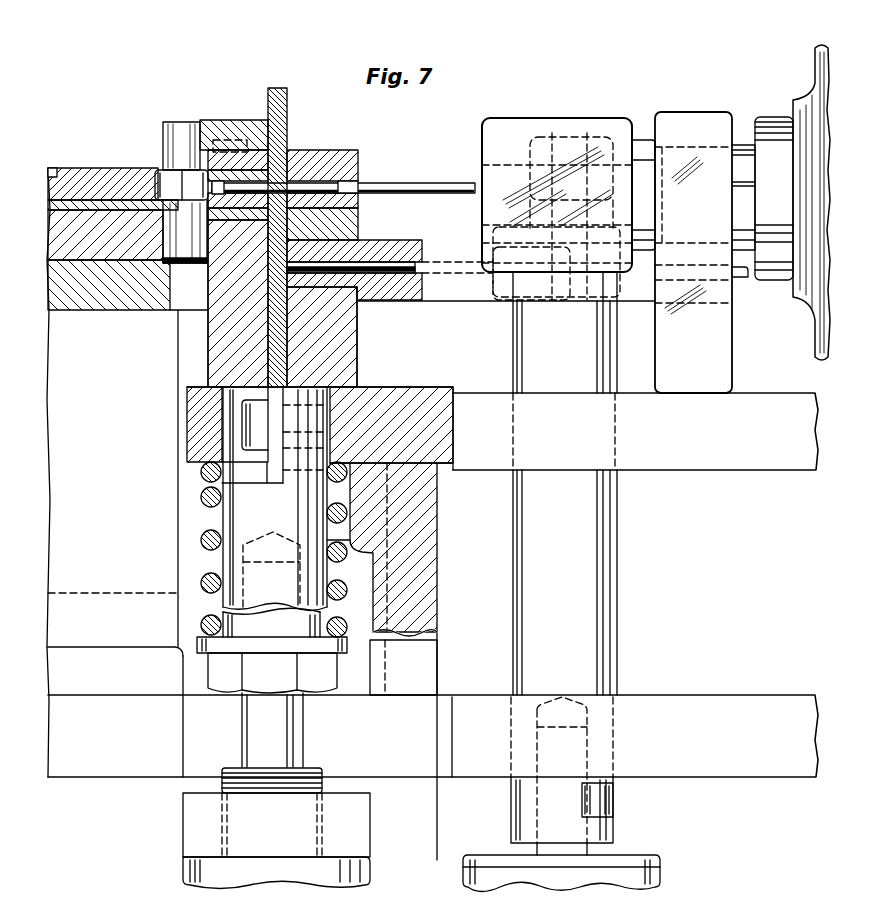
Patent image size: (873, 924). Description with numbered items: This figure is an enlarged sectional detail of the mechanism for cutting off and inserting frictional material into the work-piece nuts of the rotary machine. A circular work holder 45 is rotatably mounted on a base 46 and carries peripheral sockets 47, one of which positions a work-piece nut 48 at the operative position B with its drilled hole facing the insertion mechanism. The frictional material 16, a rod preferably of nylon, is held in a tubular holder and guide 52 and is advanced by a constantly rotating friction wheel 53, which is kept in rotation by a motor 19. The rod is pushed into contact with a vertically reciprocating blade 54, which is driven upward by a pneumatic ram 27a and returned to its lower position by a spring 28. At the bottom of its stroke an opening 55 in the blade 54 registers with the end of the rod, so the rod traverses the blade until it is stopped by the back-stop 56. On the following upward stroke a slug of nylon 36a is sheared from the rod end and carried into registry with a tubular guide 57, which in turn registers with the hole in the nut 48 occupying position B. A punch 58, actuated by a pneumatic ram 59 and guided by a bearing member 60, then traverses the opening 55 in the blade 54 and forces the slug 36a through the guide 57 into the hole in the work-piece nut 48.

The operative position B is at (167, 182).
The work-piece nut 48 is at (163, 170).
The peripheral sockets 47 is at (158, 195).
The circular work holder 45 is at (92, 242).
The base 46 is at (100, 743).
The back-stop 56 is at (222, 318).
The tubular guide 57 is at (247, 205).
The slug of nylon 36a is at (286, 180).
The blade 54 is at (288, 106).
The punch 58 is at (386, 191).
The bearing member 60 is at (343, 203).
The opening 55 is at (285, 208).
The frictional material 16 is at (384, 270).
The tubular holder and guide 52 is at (462, 288).
The friction wheel 53 is at (510, 290).
The pneumatic ram 59 is at (808, 122).
The spring 28 is at (203, 540).
The pneumatic ram 27a is at (200, 867).
The motor 19 is at (628, 866).